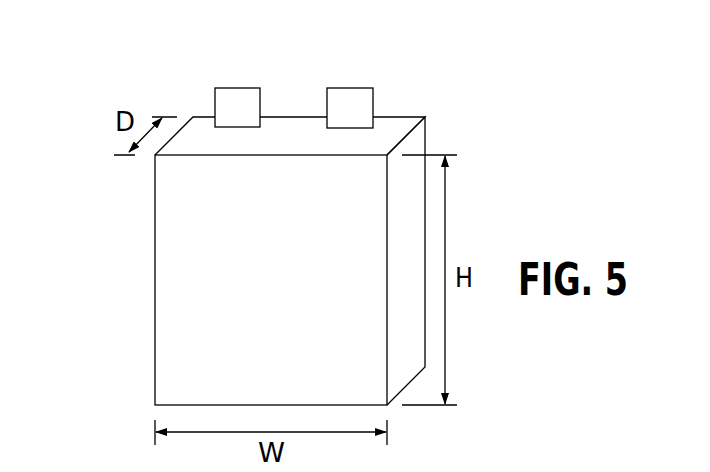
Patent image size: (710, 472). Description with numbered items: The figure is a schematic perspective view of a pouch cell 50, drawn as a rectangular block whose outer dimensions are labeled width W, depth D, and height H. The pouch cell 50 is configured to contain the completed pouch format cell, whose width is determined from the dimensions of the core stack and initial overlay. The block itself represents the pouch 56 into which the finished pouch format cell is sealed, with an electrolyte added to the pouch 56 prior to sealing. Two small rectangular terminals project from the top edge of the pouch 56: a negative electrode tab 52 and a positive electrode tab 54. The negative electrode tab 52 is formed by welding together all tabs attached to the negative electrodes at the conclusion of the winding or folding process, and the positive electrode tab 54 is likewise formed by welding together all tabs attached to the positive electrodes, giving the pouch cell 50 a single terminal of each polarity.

The pouch cell 50 is at (292, 207).
The negative electrode tab 52 is at (347, 105).
The positive electrode tab 54 is at (237, 105).
The pouch 56 is at (203, 290).